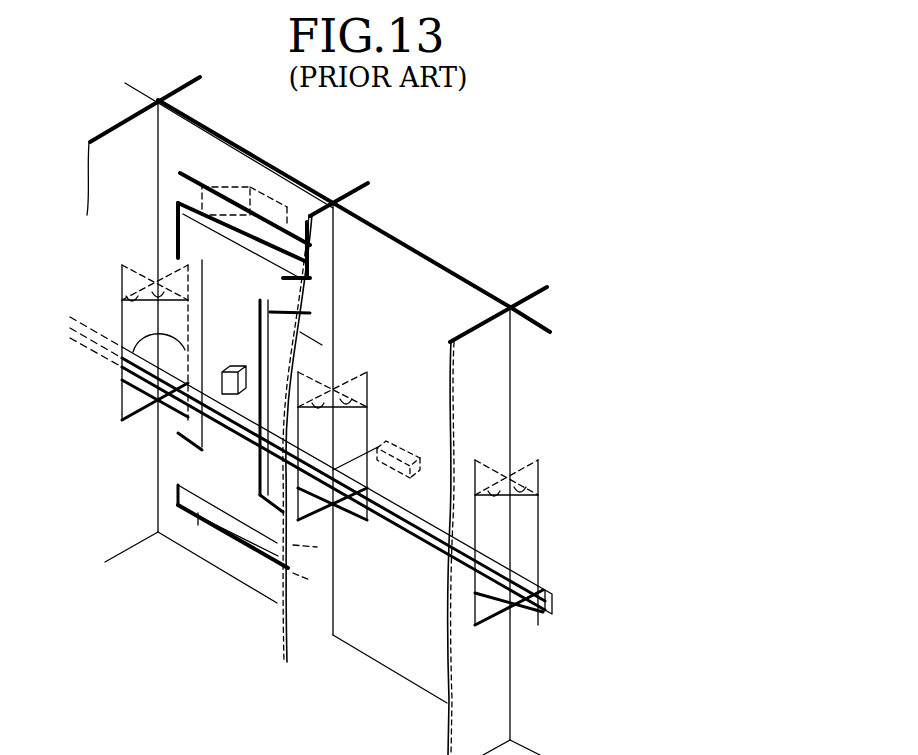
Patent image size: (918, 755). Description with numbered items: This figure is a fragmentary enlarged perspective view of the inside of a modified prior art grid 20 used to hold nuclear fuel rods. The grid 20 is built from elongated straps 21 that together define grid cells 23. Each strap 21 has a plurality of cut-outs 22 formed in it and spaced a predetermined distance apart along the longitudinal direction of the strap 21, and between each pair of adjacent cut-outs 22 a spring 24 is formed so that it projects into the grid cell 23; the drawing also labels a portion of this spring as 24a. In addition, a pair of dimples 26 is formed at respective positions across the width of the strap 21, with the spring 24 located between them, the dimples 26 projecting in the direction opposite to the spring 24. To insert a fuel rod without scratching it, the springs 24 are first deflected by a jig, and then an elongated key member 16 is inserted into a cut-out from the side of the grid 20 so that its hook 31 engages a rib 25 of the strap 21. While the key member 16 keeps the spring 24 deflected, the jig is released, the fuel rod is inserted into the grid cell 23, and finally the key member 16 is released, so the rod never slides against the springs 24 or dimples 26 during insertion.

The elongated key member 16 is at (398, 530).
The grid 20 is at (478, 260).
The elongated strap 21 is at (103, 130).
The cut-out 22 is at (157, 282).
The grid cell 23 is at (146, 127).
The spring 24 is at (220, 487).
The bracket flange 24a is at (257, 540).
The rib 25 is at (125, 395).
The dimple 26 is at (267, 195).
The hook 31 is at (122, 358).